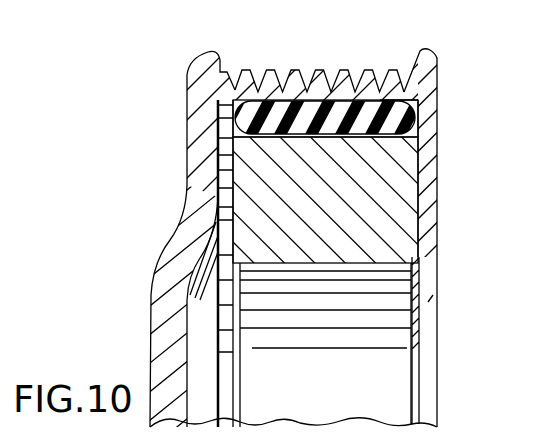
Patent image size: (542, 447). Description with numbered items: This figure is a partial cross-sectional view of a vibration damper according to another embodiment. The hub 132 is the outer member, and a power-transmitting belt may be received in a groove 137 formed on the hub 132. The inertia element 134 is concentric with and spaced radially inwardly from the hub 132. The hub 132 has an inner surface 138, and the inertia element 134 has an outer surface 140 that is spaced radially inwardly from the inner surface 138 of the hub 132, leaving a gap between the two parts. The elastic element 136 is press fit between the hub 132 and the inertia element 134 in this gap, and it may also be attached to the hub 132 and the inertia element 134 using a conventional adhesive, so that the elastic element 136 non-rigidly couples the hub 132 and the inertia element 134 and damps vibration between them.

The hub 132 is at (271, 223).
The inertia element 134 is at (271, 223).
The elastic element 136 is at (325, 73).
The groove 137 is at (316, 51).
The inner surface 138 is at (395, 55).
The outer surface 140 is at (357, 117).